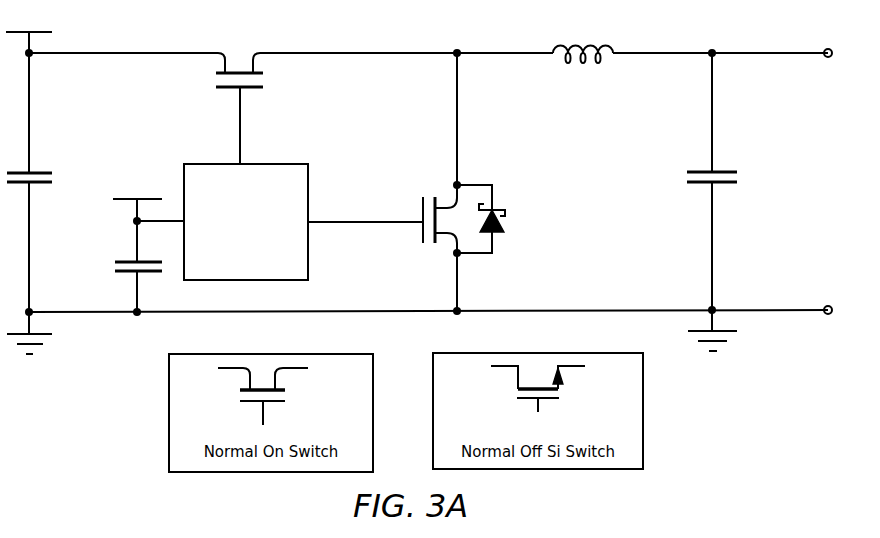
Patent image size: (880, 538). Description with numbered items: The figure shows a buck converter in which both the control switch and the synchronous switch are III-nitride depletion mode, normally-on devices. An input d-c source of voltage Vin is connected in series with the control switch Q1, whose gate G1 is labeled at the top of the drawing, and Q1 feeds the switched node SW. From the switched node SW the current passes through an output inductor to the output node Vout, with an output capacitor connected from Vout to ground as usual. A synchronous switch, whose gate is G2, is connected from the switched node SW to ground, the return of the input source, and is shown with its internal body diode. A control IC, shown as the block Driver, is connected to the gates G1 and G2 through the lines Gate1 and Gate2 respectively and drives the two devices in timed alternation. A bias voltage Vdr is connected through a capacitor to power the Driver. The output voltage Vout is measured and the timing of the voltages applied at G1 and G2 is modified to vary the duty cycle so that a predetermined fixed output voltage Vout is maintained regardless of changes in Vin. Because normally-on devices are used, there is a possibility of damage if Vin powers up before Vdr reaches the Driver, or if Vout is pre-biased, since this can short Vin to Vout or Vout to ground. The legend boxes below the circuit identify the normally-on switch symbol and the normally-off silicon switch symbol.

The control switch Q1 is at (273, 80).
The gate of control switch Q1 G1 is at (235, 34).
The gate of synchronous switch Q2 G2 is at (458, 206).
The switched node SW is at (449, 34).
The input voltage Vin is at (27, 24).
The output voltage Vout is at (763, 39).
The bias voltage Vdr is at (148, 248).
The gate drive signal for Q1 Gate1 is at (207, 133).
The gate drive signal for synchronous switch Gate2 is at (365, 211).
The control IC driver Driver is at (246, 222).